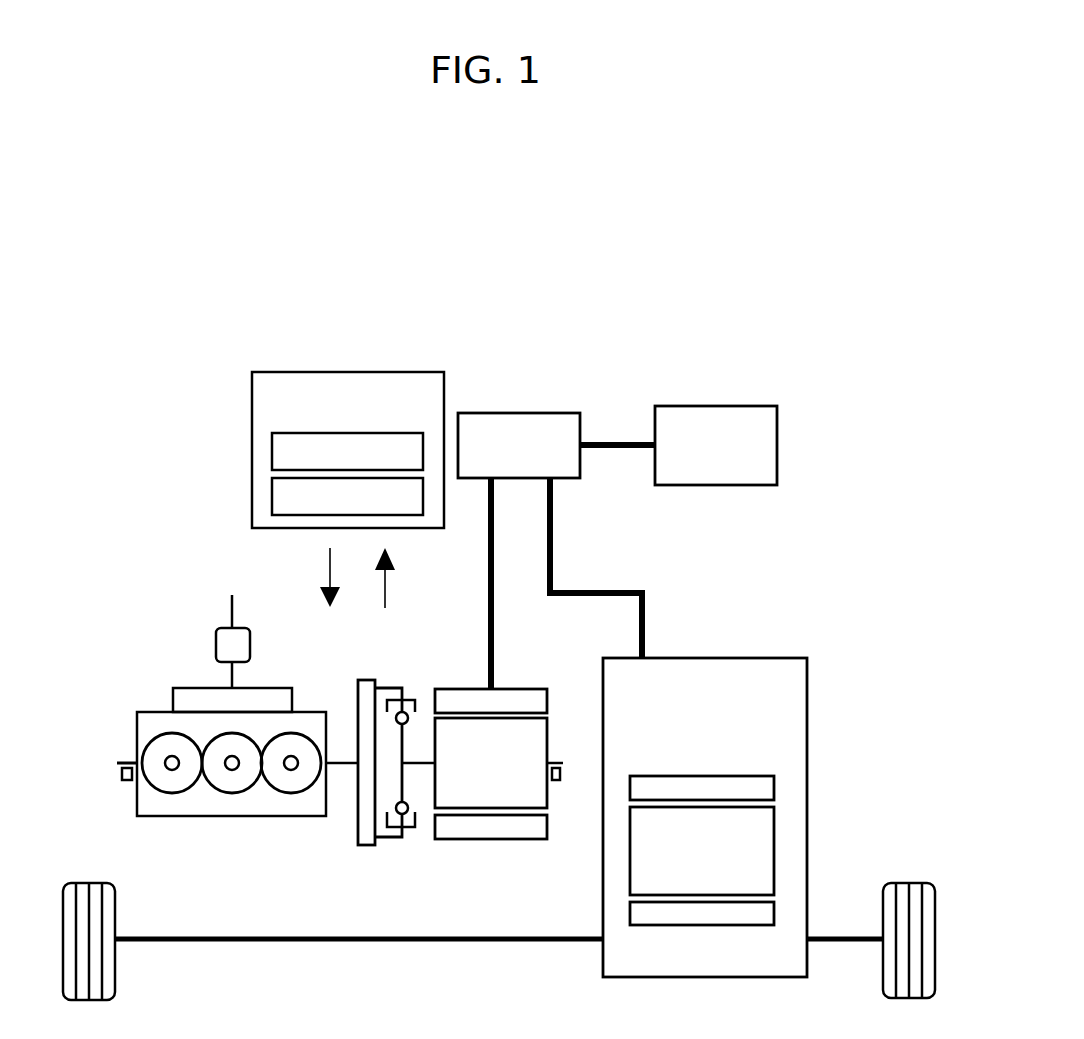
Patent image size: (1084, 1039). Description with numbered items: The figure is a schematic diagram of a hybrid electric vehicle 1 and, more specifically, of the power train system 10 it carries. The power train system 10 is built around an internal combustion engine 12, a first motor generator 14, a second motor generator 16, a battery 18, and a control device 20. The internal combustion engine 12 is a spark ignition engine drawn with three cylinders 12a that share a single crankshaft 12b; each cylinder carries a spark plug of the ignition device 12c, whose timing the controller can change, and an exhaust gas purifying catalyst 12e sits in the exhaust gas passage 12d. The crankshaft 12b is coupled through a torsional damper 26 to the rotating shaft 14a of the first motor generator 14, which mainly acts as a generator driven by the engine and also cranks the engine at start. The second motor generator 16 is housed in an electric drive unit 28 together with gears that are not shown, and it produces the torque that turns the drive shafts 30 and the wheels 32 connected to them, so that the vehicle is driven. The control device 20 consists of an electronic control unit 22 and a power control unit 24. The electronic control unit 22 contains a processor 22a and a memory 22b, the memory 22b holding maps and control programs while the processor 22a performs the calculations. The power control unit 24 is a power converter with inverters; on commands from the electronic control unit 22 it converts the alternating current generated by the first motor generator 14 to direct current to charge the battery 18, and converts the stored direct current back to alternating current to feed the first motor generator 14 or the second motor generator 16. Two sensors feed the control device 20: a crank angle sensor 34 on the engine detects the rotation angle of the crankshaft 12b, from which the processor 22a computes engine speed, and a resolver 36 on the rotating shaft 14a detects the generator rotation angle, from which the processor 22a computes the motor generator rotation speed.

The hybrid electric vehicle 1 is at (800, 184).
The power train system 10 is at (747, 296).
The internal combustion engine 12 is at (133, 669).
The cylinders 12a is at (165, 735).
The crankshaft 12b is at (345, 762).
The ignition device 12c is at (168, 757).
The exhaust gas passage 12d is at (232, 605).
The exhaust gas purifying catalyst 12e is at (216, 648).
The first motor generator 14 is at (521, 681).
The rotating shaft 14a is at (420, 760).
The second motor generator 16 is at (762, 775).
The battery 18 is at (727, 406).
The control device 20 is at (465, 313).
The electronic control unit 22 is at (415, 362).
The processor 22a is at (272, 462).
The memory 22b is at (272, 494).
The power control unit 24 is at (573, 413).
The torsional damper 26 is at (392, 688).
The electric drive unit 28 is at (745, 645).
The drive shafts 30 is at (368, 938).
The wheels 32 is at (95, 883).
The crank angle sensor 34 is at (128, 780).
The resolver 36 is at (553, 782).